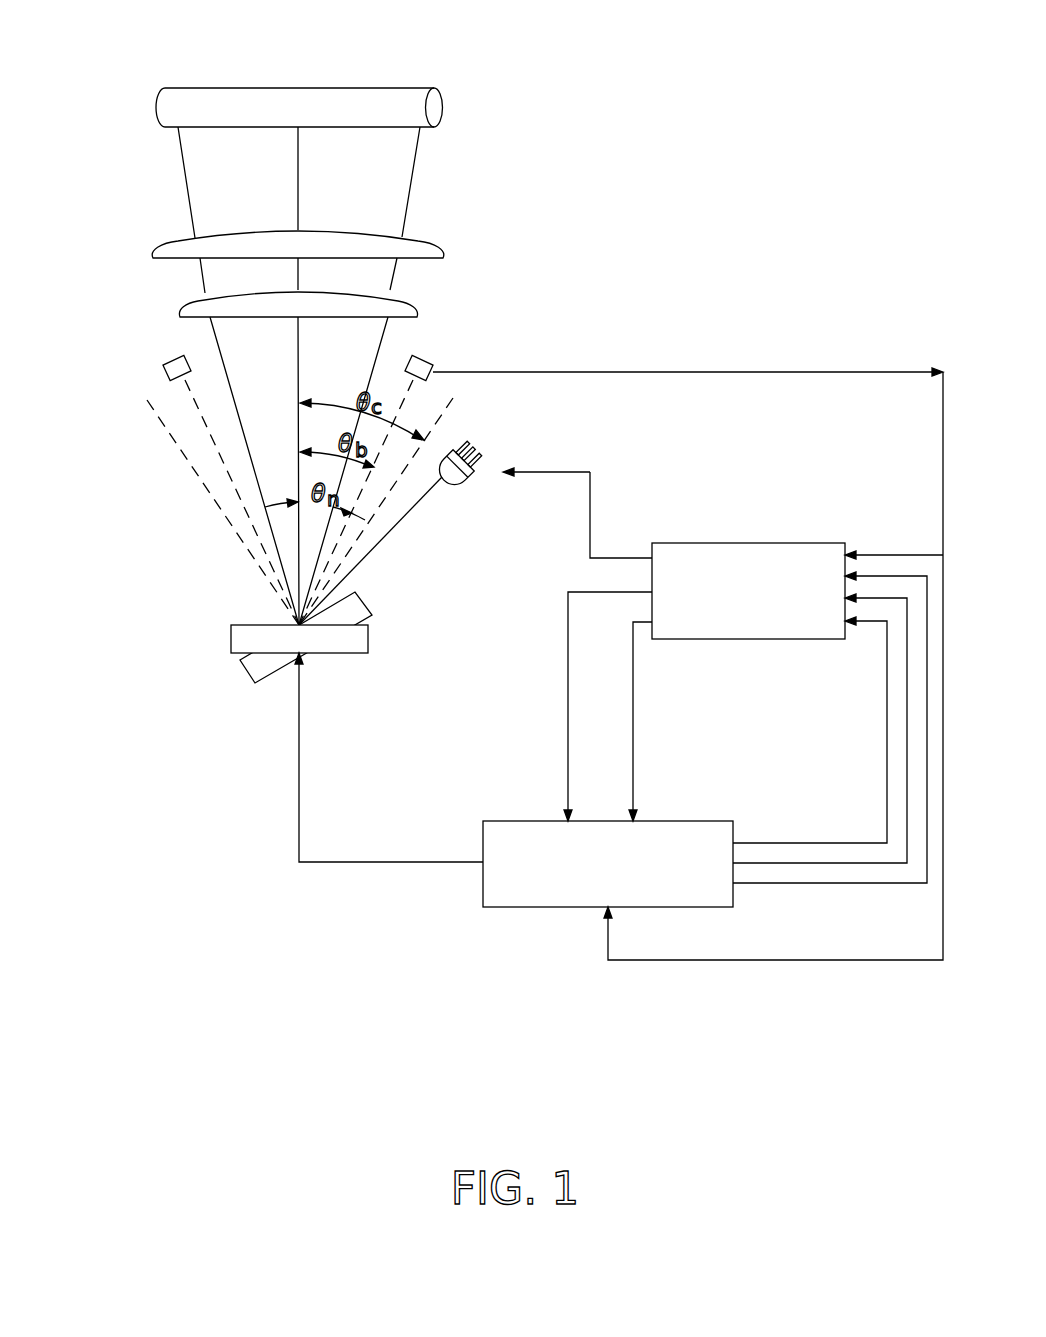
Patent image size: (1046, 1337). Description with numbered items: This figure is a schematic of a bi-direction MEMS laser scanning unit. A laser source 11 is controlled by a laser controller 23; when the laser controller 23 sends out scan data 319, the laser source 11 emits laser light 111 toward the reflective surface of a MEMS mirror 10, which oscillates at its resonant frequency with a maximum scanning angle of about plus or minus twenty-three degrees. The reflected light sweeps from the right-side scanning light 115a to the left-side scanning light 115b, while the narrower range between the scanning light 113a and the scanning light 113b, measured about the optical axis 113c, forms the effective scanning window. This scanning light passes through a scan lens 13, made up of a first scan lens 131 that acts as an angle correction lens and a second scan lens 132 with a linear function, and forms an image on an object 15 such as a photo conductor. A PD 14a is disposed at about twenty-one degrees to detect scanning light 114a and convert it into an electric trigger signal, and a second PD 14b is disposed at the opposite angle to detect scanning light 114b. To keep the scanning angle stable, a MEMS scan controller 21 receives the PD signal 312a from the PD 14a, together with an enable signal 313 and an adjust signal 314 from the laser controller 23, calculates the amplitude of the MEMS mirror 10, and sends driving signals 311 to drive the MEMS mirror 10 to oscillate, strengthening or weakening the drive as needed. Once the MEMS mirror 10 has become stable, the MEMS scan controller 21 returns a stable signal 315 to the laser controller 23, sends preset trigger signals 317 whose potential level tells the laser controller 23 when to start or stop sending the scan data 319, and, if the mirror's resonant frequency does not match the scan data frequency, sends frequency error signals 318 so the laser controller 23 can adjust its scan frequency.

The MEMS mirror 10 is at (231, 634).
The laser source 11 is at (475, 477).
The laser light 111 is at (392, 533).
The scanning light 113a is at (383, 343).
The scanning light 113b is at (215, 343).
The optical axis 113c is at (297, 353).
The scanning light 114a is at (407, 396).
The first sensing beam (second side) 114b is at (196, 408).
The right-side scanning light 115a is at (445, 418).
The left-side scanning light 115b is at (213, 497).
The scan lens 13 is at (357, 262).
The first scan lens 131 is at (340, 296).
The second scan lens 132 is at (423, 250).
The PD 14a is at (430, 360).
The PD 14b is at (167, 361).
The object 15 is at (362, 105).
The MEMS scan controller 21 is at (515, 821).
The laser controller 23 is at (778, 543).
The driving signals 311 is at (299, 740).
The PD signal 312a is at (943, 492).
The enable (ENB) signal 313 is at (633, 738).
The adjust signal 314 is at (568, 712).
The stable signal 315 is at (799, 843).
The trigger signal 317 is at (801, 865).
The frequency error signal 318 is at (887, 884).
The scan data 319 is at (590, 491).